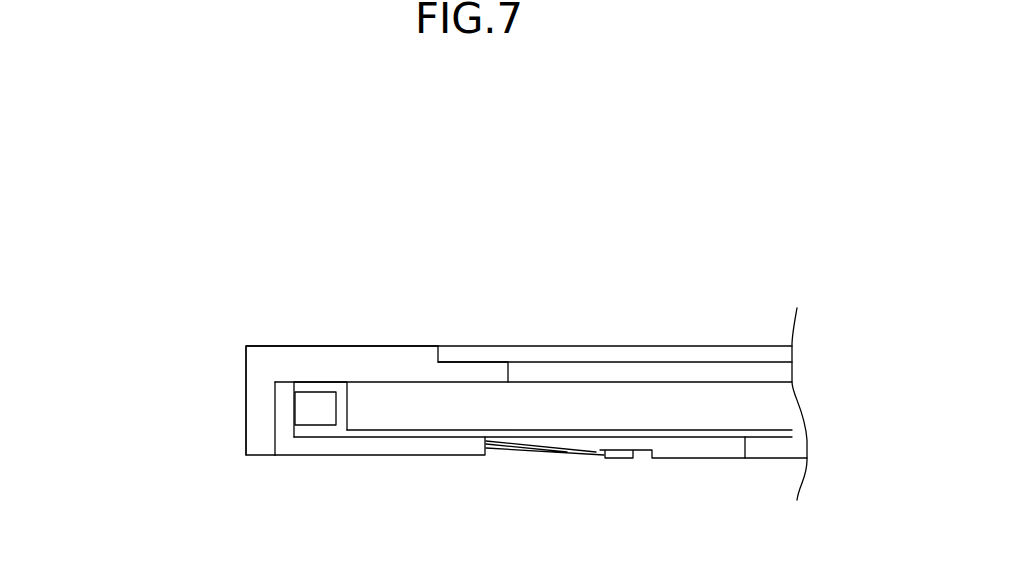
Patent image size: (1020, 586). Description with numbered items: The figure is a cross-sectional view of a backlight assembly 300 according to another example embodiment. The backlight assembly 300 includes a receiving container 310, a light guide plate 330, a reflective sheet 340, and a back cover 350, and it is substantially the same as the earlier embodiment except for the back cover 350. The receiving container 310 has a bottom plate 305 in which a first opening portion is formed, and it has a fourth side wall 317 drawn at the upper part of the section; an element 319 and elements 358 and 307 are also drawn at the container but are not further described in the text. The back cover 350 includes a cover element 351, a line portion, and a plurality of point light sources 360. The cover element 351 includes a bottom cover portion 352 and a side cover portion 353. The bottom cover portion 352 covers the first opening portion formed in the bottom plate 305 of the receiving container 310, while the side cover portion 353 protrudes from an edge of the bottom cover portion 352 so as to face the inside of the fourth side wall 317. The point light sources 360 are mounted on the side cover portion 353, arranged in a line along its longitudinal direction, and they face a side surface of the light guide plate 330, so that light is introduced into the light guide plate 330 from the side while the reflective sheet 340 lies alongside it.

The backlight assembly 300 is at (523, 171).
The fourth side wall 317 is at (307, 352).
The protruding portion 319 is at (465, 352).
The receiving container 310 is at (540, 346).
The light guide plate 330 is at (622, 403).
The reflective sheet 340 is at (700, 415).
The back cover 350 is at (108, 370).
The point light sources 360 is at (305, 405).
The cover element 351 is at (167, 400).
The side cover portion 353 is at (283, 430).
The bottom cover portion 352 is at (372, 449).
The flexible circuit film 358 is at (587, 457).
The bottom plate 305 is at (698, 459).
The side member 307 is at (779, 449).